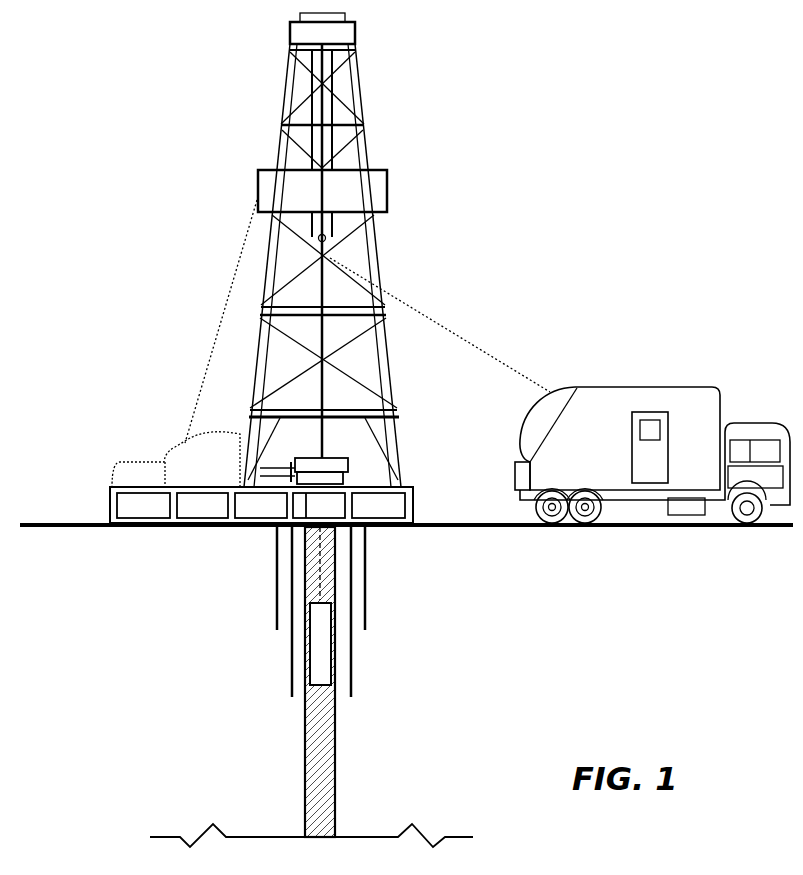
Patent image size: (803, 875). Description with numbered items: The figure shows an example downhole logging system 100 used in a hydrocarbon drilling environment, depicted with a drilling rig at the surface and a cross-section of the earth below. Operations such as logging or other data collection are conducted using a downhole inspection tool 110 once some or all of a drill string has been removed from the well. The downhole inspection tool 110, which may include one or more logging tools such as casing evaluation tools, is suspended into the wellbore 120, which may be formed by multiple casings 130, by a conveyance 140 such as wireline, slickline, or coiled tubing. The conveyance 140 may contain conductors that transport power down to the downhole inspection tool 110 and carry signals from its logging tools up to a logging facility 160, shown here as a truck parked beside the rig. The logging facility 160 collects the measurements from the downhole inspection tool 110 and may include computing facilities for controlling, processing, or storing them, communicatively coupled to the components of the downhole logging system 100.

The downhole logging system 100 is at (548, 193).
The downhole inspection tool 110 is at (323, 659).
The wellbore 120 is at (326, 726).
The casings 130 is at (302, 736).
The conveyance 140 is at (311, 578).
The logging facility 160 is at (646, 384).